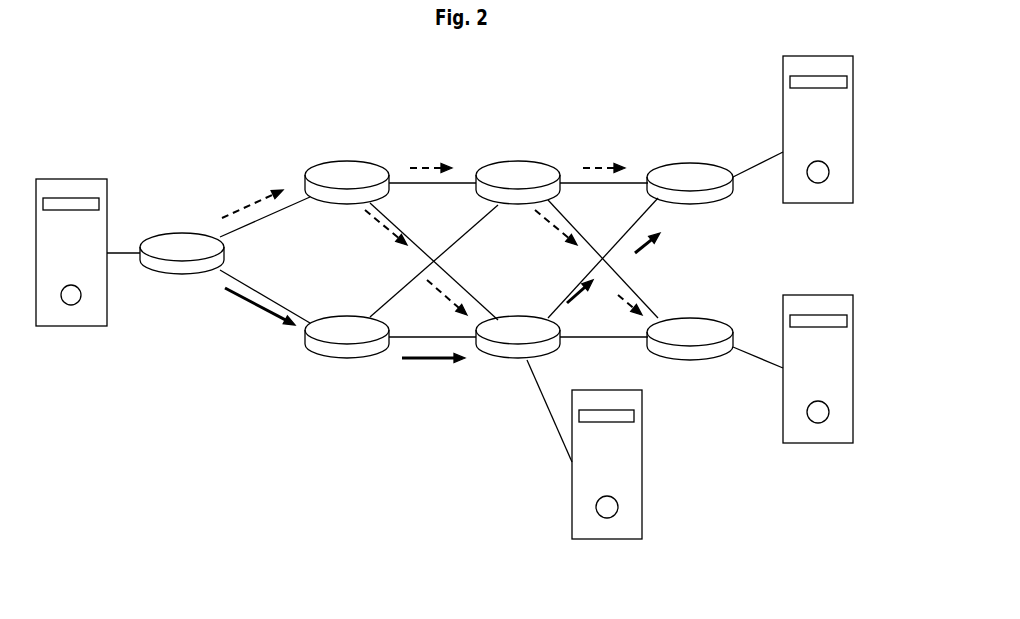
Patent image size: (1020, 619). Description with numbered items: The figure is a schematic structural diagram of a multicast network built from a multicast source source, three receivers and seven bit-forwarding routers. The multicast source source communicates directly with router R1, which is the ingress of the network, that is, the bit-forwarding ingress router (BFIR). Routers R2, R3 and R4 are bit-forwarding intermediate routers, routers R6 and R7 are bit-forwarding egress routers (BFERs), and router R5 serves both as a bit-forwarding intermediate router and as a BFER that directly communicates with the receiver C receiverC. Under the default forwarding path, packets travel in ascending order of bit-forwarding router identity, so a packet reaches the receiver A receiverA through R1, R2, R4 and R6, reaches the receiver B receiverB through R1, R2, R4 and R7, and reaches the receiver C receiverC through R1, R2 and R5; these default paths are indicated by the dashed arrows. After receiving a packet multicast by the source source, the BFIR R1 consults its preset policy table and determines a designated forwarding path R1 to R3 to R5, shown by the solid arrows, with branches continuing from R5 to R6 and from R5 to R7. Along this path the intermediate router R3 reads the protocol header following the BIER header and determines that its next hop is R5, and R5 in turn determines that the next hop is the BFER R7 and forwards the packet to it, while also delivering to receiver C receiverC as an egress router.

The bit-forwarding ingress router R1 is at (182, 280).
The bit-forwarding intermediate router R2 is at (347, 208).
The bit-forwarding intermediate router R3 is at (347, 366).
The bit-forwarding intermediate router R4 is at (518, 208).
The bit-forwarding intermediate router and BFER R5 is at (518, 343).
The bit-forwarding egress router R6 is at (690, 191).
The bit-forwarding egress router R7 is at (690, 346).
The multicast source is at (81, 286).
The receiver A receiverA is at (832, 154).
The receiver B receiverB is at (831, 397).
The receiver C receiverC is at (620, 489).